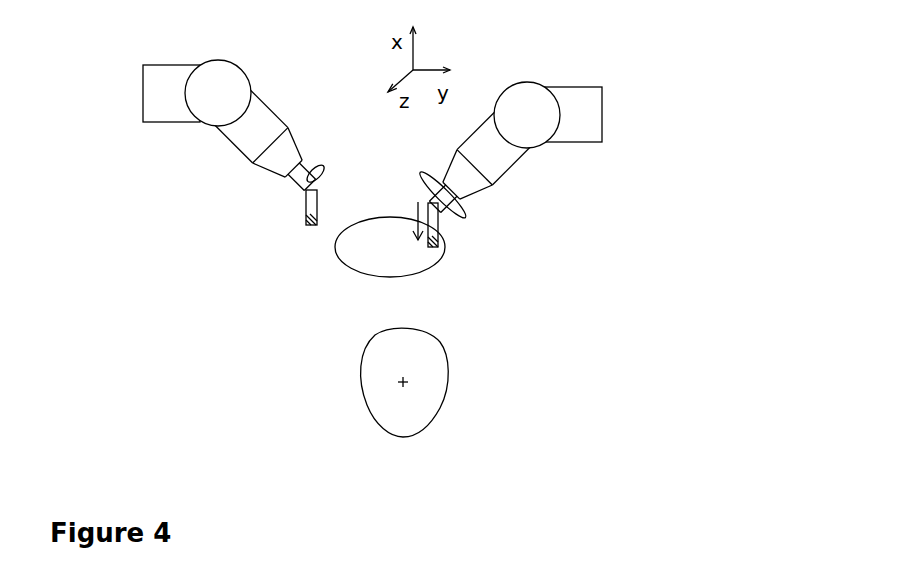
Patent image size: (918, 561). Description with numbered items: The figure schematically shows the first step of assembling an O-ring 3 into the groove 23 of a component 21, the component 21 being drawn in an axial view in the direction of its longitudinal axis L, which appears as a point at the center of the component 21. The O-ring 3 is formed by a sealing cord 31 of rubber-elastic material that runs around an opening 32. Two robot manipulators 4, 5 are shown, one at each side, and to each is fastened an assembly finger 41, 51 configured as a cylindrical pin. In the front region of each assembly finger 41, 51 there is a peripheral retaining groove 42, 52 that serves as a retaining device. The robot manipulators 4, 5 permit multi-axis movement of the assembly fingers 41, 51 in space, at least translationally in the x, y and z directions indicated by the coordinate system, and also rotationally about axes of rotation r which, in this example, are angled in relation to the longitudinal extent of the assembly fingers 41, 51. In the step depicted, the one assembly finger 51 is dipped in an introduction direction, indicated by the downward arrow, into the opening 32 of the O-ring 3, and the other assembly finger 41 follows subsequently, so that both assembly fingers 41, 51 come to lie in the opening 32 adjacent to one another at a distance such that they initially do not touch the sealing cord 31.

The O-ring 3 is at (374, 229).
The sealing cord 31 is at (381, 217).
The opening 32 is at (383, 248).
The robot manipulator 4 is at (240, 150).
The assembly finger 41 is at (306, 210).
The retaining groove 42 is at (306, 225).
The robot manipulator 5 is at (553, 169).
The assembly finger 51 is at (438, 223).
The retaining groove 52 is at (443, 247).
The component 21 is at (478, 408).
The groove 23 is at (447, 381).
The longitudinal axis L is at (408, 387).
The axis of rotation r is at (314, 170).